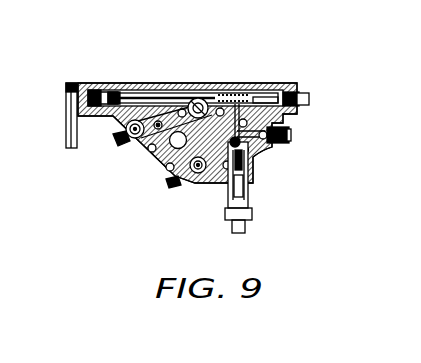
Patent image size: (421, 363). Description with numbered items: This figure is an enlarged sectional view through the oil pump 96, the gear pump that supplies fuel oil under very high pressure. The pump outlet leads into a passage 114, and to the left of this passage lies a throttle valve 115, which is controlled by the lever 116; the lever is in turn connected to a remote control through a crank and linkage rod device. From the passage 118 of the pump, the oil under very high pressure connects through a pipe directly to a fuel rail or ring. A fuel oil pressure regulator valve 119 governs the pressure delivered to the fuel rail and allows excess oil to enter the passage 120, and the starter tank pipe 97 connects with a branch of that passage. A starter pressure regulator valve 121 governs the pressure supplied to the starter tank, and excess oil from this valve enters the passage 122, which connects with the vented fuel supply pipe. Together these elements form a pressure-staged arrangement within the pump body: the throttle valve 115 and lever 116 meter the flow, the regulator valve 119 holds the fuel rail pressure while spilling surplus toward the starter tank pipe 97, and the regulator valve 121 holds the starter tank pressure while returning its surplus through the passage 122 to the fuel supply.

The pump 96 is at (143, 168).
The starter tank pipe 97 is at (262, 150).
The passage 114 is at (190, 97).
The throttle valve 115 is at (176, 66).
The lever 116 is at (66, 133).
The passage 118 is at (150, 92).
The fuel oil pressure regulator valve 119 is at (233, 93).
The passage 120 is at (290, 109).
The starter pressure regulator valve 121 is at (243, 180).
The passage 122 is at (230, 183).